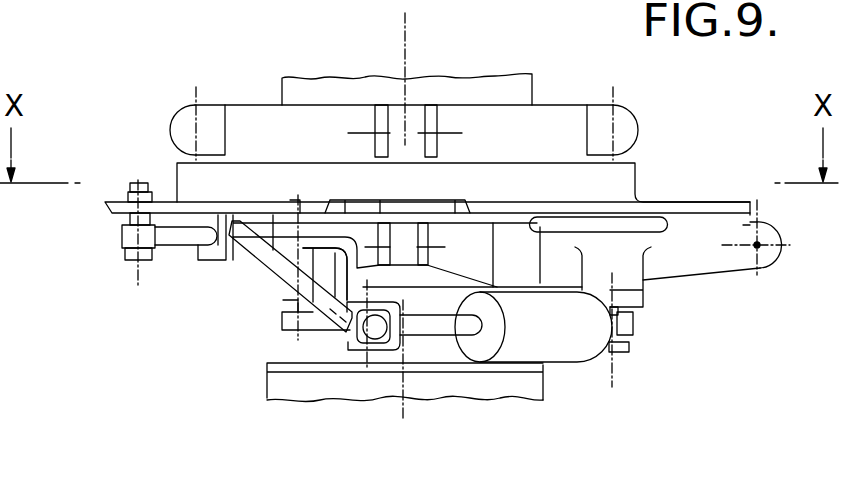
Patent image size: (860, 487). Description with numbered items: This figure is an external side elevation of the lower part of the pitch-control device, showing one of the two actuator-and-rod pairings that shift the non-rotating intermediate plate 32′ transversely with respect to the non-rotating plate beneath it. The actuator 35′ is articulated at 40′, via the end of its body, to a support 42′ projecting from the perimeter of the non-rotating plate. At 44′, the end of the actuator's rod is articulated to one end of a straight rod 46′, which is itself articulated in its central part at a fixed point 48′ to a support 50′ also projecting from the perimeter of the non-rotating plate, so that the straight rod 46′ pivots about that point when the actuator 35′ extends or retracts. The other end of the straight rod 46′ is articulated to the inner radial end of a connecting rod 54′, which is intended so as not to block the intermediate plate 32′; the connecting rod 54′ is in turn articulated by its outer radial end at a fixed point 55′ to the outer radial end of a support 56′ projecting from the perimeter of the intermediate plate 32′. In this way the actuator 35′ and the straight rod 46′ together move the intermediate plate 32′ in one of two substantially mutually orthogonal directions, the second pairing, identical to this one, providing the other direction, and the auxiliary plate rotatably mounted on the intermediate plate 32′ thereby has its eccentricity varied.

The intermediate plate 32′ is at (598, 193).
The support 56′ is at (110, 208).
The fixed point 55′ is at (128, 260).
The connecting rod 54′ is at (182, 238).
The straight rod 46′ is at (275, 265).
The fixed point 48′ is at (283, 315).
The support 50′ is at (310, 327).
The articulation 44′ is at (363, 335).
The actuator 35′ is at (567, 345).
The articulation 40′ is at (620, 357).
The support 42′ is at (632, 292).